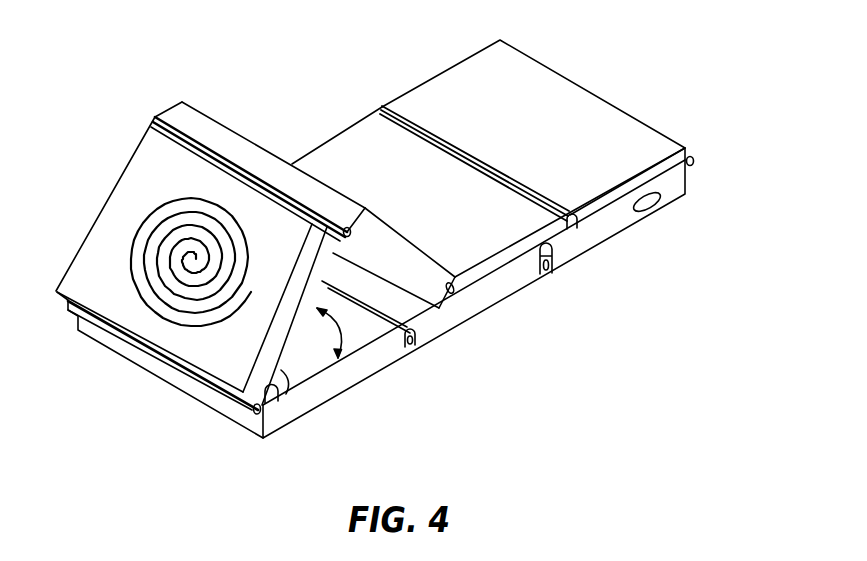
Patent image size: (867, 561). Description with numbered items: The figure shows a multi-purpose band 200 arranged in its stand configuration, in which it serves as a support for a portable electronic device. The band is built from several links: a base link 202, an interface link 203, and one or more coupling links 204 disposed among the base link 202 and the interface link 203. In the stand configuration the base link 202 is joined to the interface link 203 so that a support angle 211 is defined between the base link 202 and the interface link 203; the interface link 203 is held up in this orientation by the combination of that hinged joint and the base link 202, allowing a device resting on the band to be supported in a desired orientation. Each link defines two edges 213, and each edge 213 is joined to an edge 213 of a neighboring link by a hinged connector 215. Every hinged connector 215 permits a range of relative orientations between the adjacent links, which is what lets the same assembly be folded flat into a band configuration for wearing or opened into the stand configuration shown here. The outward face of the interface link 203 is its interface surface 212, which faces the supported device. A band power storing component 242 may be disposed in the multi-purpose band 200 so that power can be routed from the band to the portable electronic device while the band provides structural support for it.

The multi-purpose band 200 is at (250, 89).
The base link 202 is at (341, 381).
The interface link 203 is at (257, 401).
The coupling link 204 is at (262, 133).
The support angle 211 is at (346, 340).
The interface surface 212 is at (148, 180).
The edges 213 is at (382, 105).
The hinged connector 215 is at (697, 152).
The band power storing component 242 is at (648, 208).